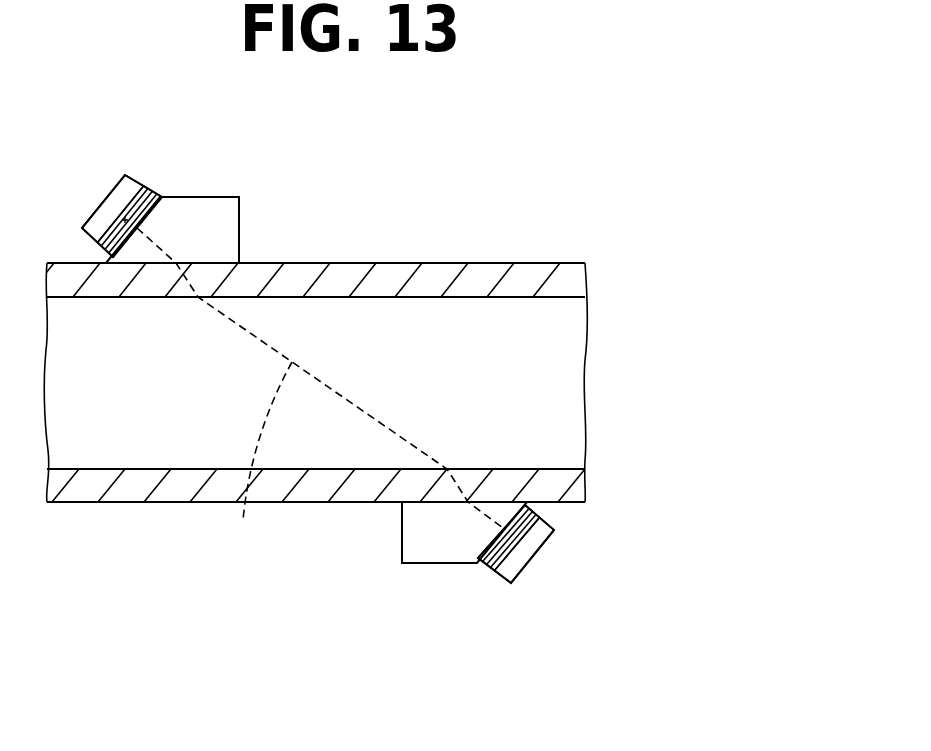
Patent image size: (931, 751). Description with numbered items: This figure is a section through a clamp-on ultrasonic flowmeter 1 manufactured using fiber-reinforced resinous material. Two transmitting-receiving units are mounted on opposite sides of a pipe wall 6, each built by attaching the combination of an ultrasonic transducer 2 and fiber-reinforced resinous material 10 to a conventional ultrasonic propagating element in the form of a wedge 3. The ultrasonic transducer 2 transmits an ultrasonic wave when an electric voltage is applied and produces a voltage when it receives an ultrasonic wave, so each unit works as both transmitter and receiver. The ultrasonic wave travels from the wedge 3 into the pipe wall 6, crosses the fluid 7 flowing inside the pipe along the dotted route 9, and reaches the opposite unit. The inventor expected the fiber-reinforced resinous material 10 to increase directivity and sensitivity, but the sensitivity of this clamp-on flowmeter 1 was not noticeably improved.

The clamp-on ultrasonic flowmeter 1 is at (137, 172).
The ultrasonic transducer 2 is at (112, 200).
The ultrasonic propagating element in wedge form 3 is at (197, 208).
The pipe wall 6 is at (395, 270).
The fluid 7 is at (463, 322).
The ultrasonic wave route 9 is at (263, 462).
The fiber-reinforced resinous material 10 is at (107, 250).